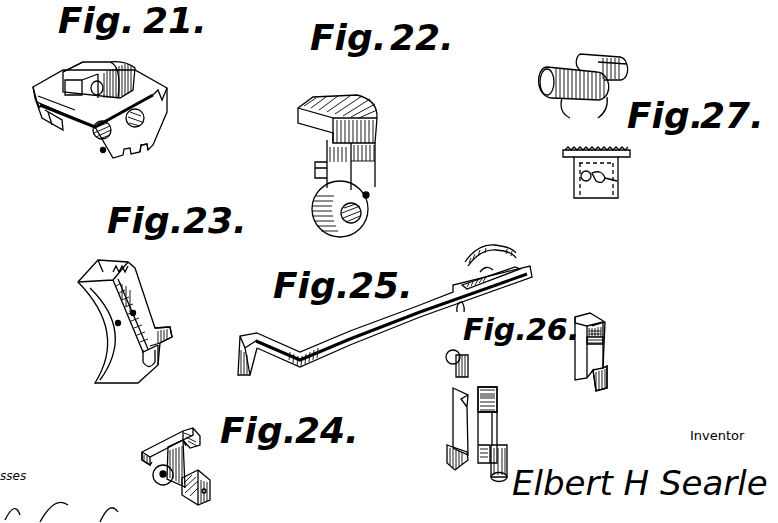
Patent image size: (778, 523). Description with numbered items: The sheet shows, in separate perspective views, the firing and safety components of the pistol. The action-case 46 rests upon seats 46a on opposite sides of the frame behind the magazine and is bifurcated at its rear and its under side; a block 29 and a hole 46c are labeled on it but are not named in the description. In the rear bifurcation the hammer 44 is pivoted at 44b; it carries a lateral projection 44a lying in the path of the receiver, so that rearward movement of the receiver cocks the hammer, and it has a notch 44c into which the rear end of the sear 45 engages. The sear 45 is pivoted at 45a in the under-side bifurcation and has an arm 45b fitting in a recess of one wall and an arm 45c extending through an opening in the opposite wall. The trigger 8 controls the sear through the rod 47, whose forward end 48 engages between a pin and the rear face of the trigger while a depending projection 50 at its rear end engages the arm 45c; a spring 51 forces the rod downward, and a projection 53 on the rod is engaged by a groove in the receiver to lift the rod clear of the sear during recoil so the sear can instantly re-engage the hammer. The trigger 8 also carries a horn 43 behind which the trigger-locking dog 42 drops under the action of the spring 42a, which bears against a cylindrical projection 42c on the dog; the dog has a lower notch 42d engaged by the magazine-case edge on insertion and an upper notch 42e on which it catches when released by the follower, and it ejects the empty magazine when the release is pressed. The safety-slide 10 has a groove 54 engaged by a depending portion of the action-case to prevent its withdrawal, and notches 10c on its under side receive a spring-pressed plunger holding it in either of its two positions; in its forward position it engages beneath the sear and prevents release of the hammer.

In FIG. 21, the action-case 46 is at (50, 80).
In FIG. 21, the lug block 29 is at (75, 72).
In FIG. 21, the hole in bracket 46c is at (108, 122).
In FIG. 21, the hammer pivot 44b is at (142, 125).
In FIG. 22, the hammer pivot 44b is at (370, 195).
In FIG. 21, the seats 46a is at (152, 146).
In FIG. 21, the sear pivot 45a is at (104, 152).
In FIG. 24, the sear pivot 45a is at (192, 457).
In FIG. 22, the hammer 44 is at (362, 170).
In FIG. 22, the lateral projection 44a is at (322, 172).
In FIG. 22, the notch 44c is at (358, 221).
In FIG. 27, the groove 54 is at (600, 63).
In FIG. 27, the safety-slide 10 is at (602, 147).
In FIG. 27, the notches 10c is at (617, 181).
In FIG. 23, the trigger 8 is at (117, 336).
In FIG. 23, the horn 43 is at (172, 333).
In FIG. 25, the rod 47 is at (372, 337).
In FIG. 25, the forward end of rod 48 is at (246, 378).
In FIG. 25, the depending projection 50 is at (459, 312).
In FIG. 25, the spring 51 is at (495, 244).
In FIG. 25, the projection on rod 53 is at (527, 254).
In FIG. 26, the trigger-locking dog 42 is at (606, 353).
In FIG. 26, the upper notch 42e is at (600, 330).
In FIG. 26, the lower notch 42d is at (604, 335).
In FIG. 26, the cylindrical projection 42c is at (445, 383).
In FIG. 26, the spring 42a is at (467, 407).
In FIG. 24, the sear 45 is at (156, 482).
In FIG. 24, the arm of sear 45b is at (178, 437).
In FIG. 24, the arm of sear 45c is at (146, 460).